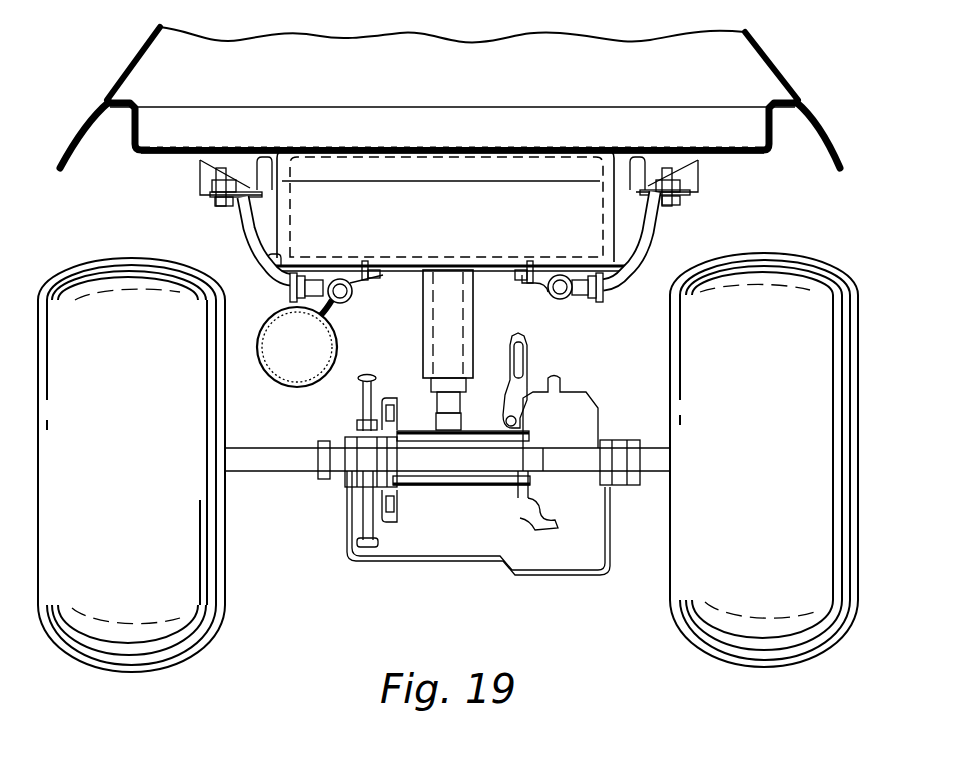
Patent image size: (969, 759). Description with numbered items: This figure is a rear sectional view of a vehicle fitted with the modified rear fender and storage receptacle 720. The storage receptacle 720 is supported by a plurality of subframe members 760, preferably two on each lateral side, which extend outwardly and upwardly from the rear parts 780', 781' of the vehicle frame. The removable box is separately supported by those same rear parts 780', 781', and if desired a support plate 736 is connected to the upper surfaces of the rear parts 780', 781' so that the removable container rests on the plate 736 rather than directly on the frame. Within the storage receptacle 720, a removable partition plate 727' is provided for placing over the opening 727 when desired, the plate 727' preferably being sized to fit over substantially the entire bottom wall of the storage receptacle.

The rear fender and storage receptacle 720 is at (728, 116).
The opening 727 is at (452, 81).
The removable partition plate 727' is at (445, 136).
The support plate 736 is at (487, 276).
The subframe members 760 is at (247, 240).
The rear part of the frame 780' is at (330, 330).
The rear part of the frame 781' is at (562, 317).